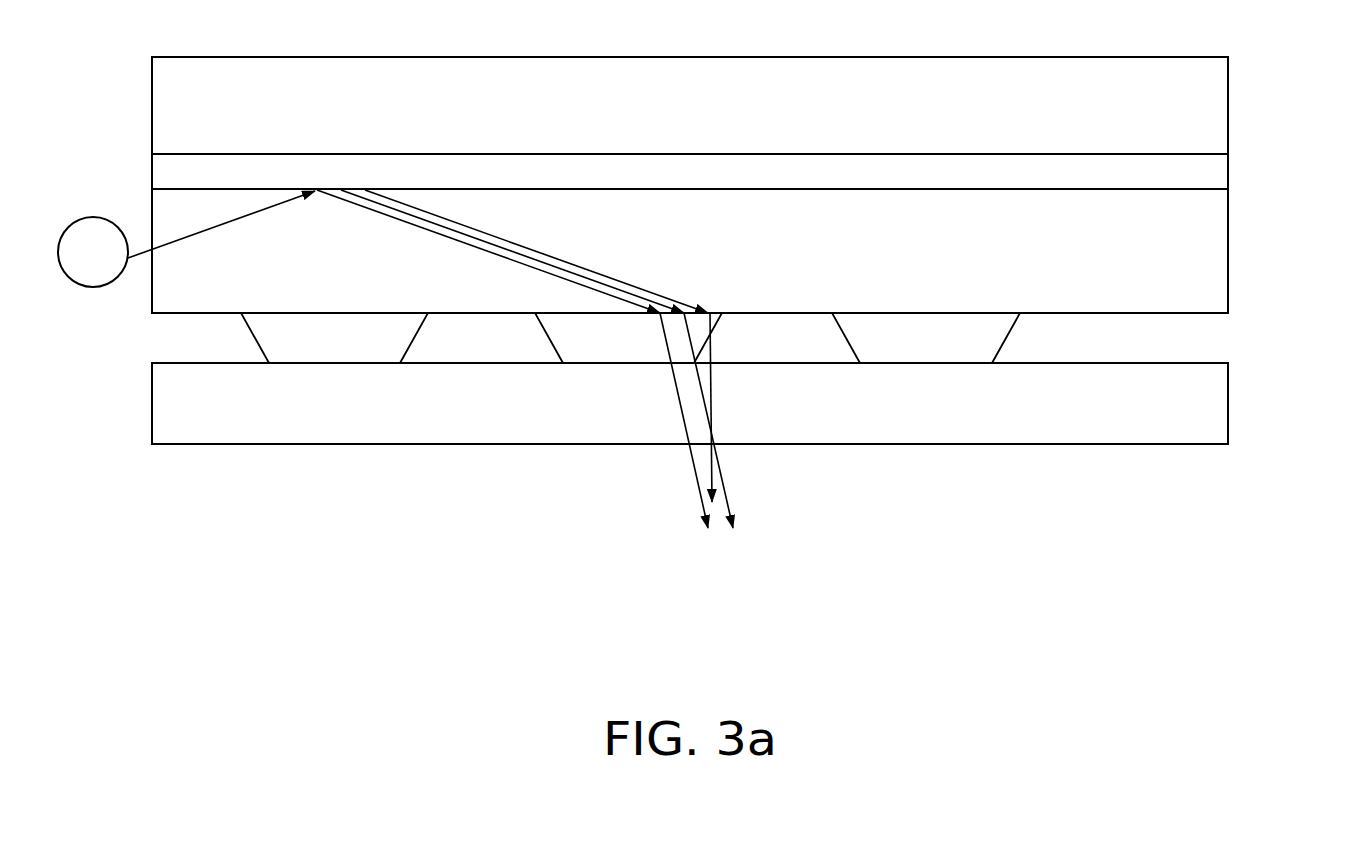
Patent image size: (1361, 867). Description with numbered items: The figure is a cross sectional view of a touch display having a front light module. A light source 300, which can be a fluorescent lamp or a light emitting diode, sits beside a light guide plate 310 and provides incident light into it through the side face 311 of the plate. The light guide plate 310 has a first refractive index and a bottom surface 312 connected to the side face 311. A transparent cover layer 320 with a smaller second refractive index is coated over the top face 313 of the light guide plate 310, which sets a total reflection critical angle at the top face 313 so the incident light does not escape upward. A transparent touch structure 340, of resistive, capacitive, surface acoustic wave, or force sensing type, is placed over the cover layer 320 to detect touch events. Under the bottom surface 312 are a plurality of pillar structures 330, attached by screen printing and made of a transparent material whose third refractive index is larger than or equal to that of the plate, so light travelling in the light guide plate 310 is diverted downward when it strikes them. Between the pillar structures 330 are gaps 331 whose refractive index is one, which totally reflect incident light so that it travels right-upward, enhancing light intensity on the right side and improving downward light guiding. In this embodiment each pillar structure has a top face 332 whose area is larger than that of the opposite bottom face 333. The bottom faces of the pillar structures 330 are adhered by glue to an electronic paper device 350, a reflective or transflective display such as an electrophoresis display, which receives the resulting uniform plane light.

The light source 300 is at (88, 230).
The light guide plate 310 is at (1202, 247).
The side face 311 is at (153, 280).
The bottom surface 312 is at (217, 312).
The top face 313 is at (713, 190).
The cover layer 320 is at (1187, 175).
The pillar structures 330 is at (690, 406).
The gaps 331 is at (525, 350).
The top face 332 is at (362, 313).
The bottom face 333 is at (300, 363).
The touch structure 340 is at (1187, 90).
The electronic paper device 350 is at (1027, 412).